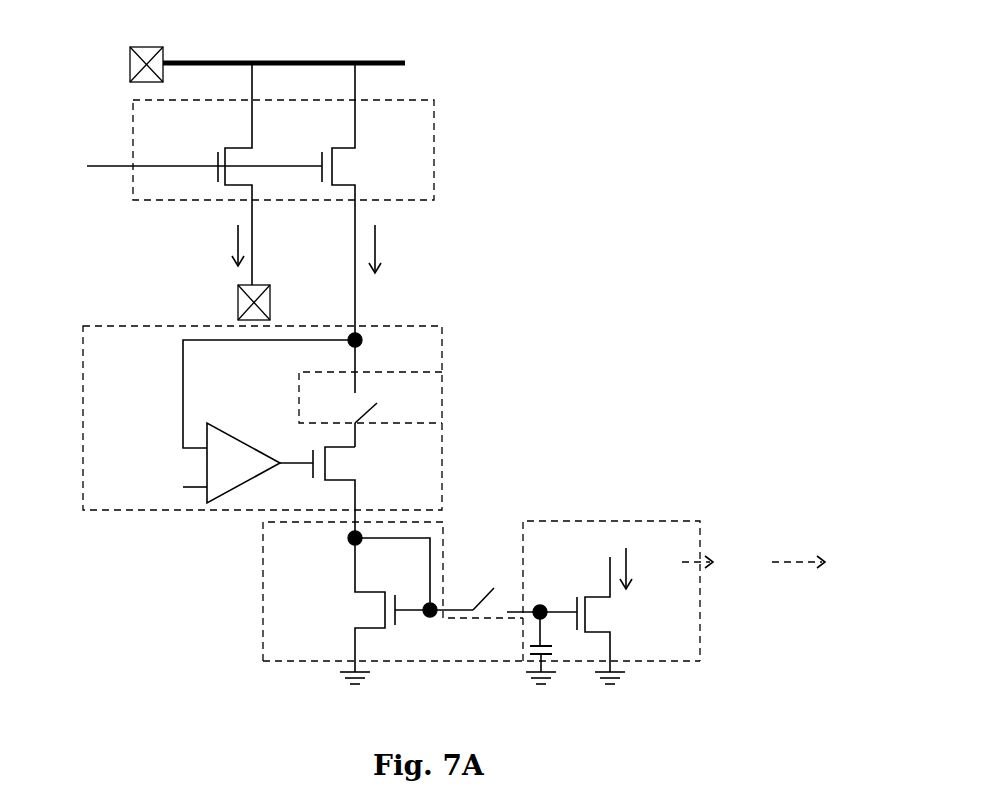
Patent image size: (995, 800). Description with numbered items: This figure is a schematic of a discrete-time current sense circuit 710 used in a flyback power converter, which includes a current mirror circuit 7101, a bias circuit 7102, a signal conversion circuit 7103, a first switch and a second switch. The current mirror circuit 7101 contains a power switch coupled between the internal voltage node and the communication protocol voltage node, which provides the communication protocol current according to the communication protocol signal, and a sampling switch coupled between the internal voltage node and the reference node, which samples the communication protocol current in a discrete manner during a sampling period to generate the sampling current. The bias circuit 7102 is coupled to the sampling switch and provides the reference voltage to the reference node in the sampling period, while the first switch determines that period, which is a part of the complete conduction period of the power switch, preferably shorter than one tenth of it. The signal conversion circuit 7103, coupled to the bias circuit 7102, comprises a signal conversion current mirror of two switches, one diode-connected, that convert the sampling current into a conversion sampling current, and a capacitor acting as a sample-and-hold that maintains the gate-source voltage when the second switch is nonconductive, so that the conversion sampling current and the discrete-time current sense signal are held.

The discrete-time current sense circuit 710 is at (550, 47).
The current mirror circuit 7101 is at (434, 128).
The bias circuit 7102 is at (138, 360).
The signal conversion circuit 7103 is at (308, 641).